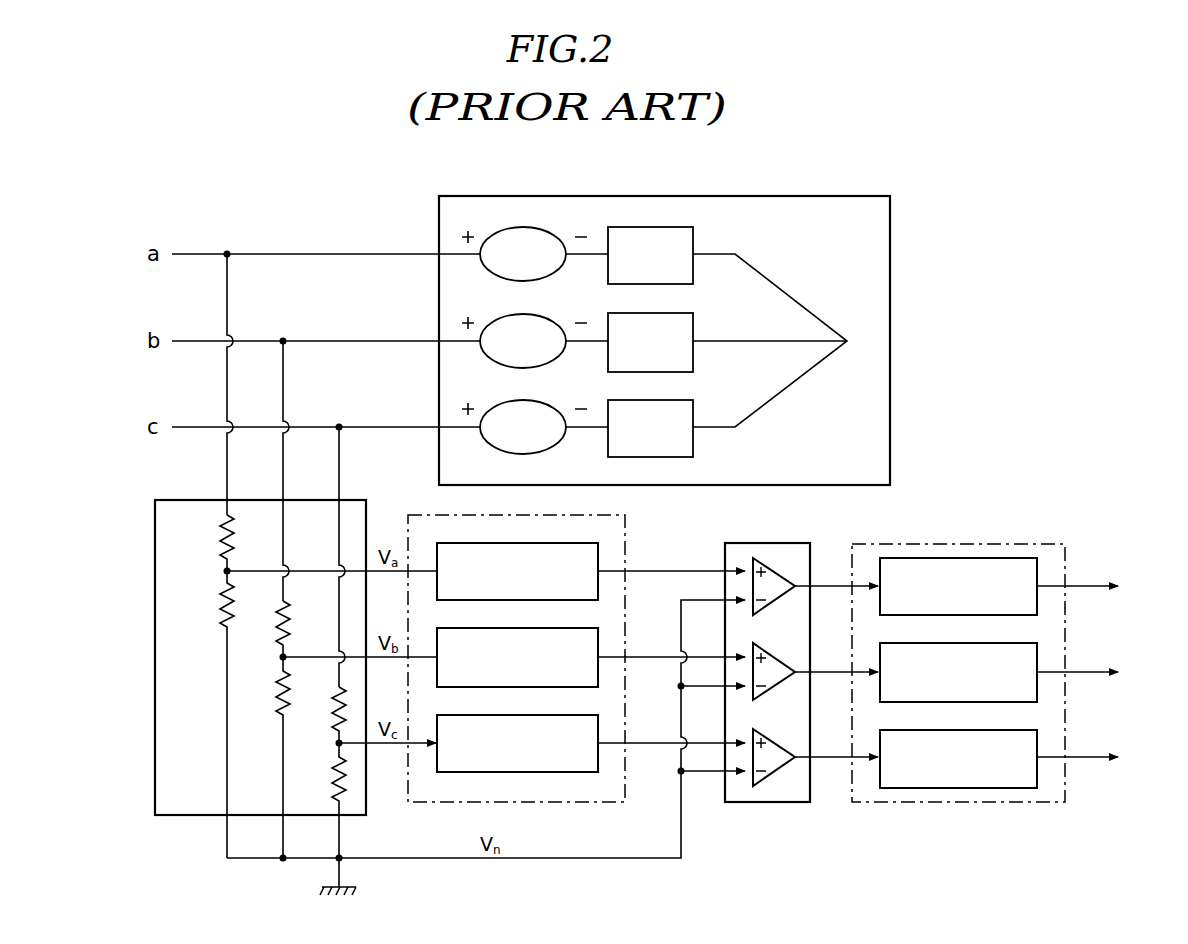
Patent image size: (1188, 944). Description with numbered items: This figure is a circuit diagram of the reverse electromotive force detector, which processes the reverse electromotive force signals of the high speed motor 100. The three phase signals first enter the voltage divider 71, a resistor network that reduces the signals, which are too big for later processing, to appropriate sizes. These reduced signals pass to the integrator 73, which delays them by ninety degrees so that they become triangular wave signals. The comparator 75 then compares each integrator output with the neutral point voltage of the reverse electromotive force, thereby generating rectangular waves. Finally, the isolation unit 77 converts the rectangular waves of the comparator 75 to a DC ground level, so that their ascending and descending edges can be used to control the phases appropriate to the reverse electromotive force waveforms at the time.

The high speed motor 100 is at (890, 262).
The voltage divider 71 is at (170, 500).
The integrator 73 is at (583, 802).
The comparator 75 is at (740, 543).
The isolation unit 77 is at (950, 802).